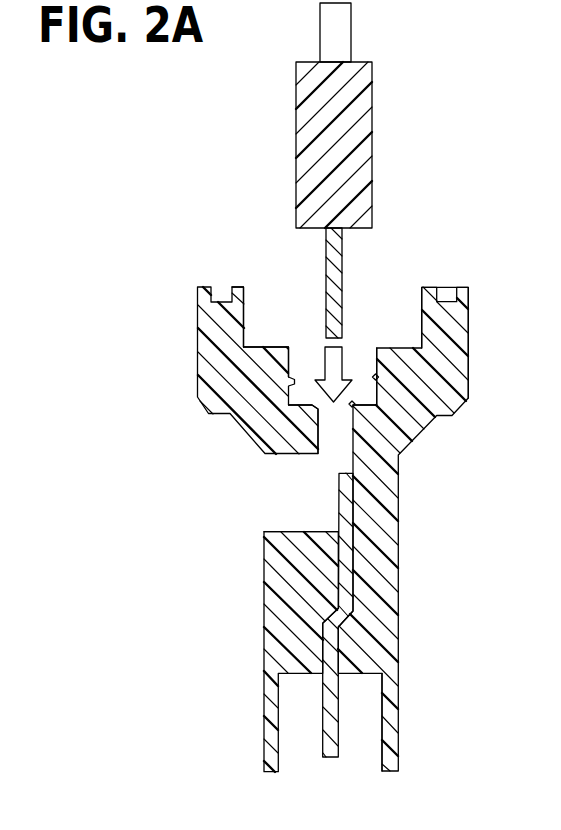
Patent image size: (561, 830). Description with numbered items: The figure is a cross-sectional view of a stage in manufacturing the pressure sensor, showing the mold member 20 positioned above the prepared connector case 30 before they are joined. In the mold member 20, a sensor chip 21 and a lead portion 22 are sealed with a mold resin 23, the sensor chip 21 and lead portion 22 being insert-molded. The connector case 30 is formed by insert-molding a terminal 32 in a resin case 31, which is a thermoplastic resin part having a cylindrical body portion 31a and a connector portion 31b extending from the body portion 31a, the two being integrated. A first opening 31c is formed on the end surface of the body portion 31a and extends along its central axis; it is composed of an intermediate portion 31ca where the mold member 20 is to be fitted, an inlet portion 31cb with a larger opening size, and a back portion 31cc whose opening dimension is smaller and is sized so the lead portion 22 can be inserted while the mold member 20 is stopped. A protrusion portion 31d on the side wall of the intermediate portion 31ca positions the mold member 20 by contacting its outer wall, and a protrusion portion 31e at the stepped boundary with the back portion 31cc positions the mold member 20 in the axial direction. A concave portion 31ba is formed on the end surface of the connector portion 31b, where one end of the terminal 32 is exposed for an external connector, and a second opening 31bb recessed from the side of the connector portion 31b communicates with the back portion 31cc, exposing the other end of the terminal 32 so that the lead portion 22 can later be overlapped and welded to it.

The mold member 20 is at (380, 107).
The sensor chip 21 is at (352, 22).
The lead portion 22 is at (342, 245).
The mold resin 23 is at (363, 148).
The connector case 30 is at (255, 578).
The resin case 31 is at (398, 626).
The body portion 31a is at (457, 325).
The connector portion 31b is at (392, 577).
The concave portion 31ba is at (382, 703).
The second opening 31bb is at (300, 531).
The first opening 31c is at (78, 290).
The intermediate portion 31ca is at (295, 363).
The inlet portion 31cb is at (242, 327).
The back portion 31cc is at (316, 437).
The protrusion portion 31d is at (376, 377).
The protrusion portion 31e is at (355, 405).
The terminal 32 is at (321, 706).